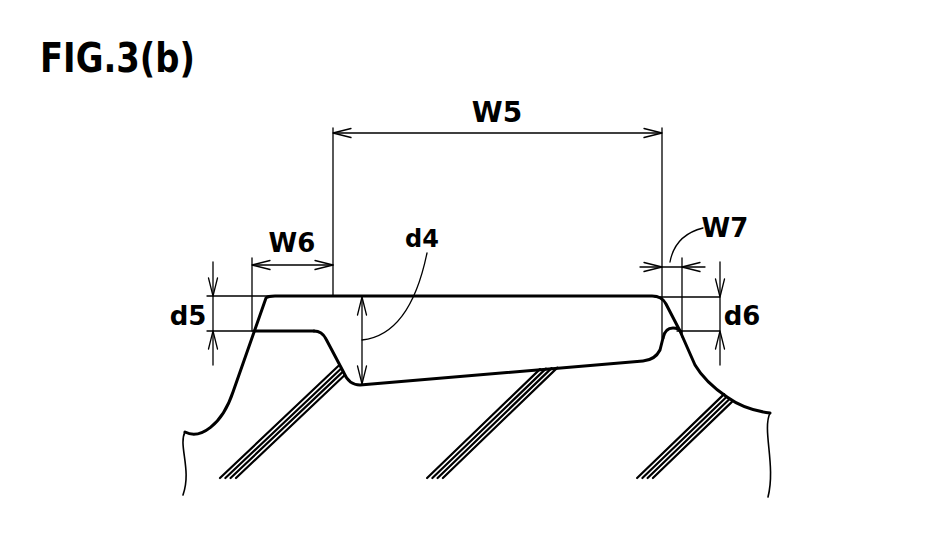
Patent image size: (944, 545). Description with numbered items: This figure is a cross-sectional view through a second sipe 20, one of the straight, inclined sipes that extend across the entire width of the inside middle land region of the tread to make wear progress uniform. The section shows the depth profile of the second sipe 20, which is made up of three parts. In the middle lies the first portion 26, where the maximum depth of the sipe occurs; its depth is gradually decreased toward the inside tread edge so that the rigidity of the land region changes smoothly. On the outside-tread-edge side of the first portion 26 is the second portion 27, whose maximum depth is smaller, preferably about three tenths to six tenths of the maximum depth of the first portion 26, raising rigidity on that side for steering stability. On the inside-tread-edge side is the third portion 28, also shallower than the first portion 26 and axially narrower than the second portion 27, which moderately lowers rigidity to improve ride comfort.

The second sipe 20 is at (458, 293).
The first portion 26 is at (497, 347).
The second portion 27 is at (295, 318).
The third portion 28 is at (665, 322).